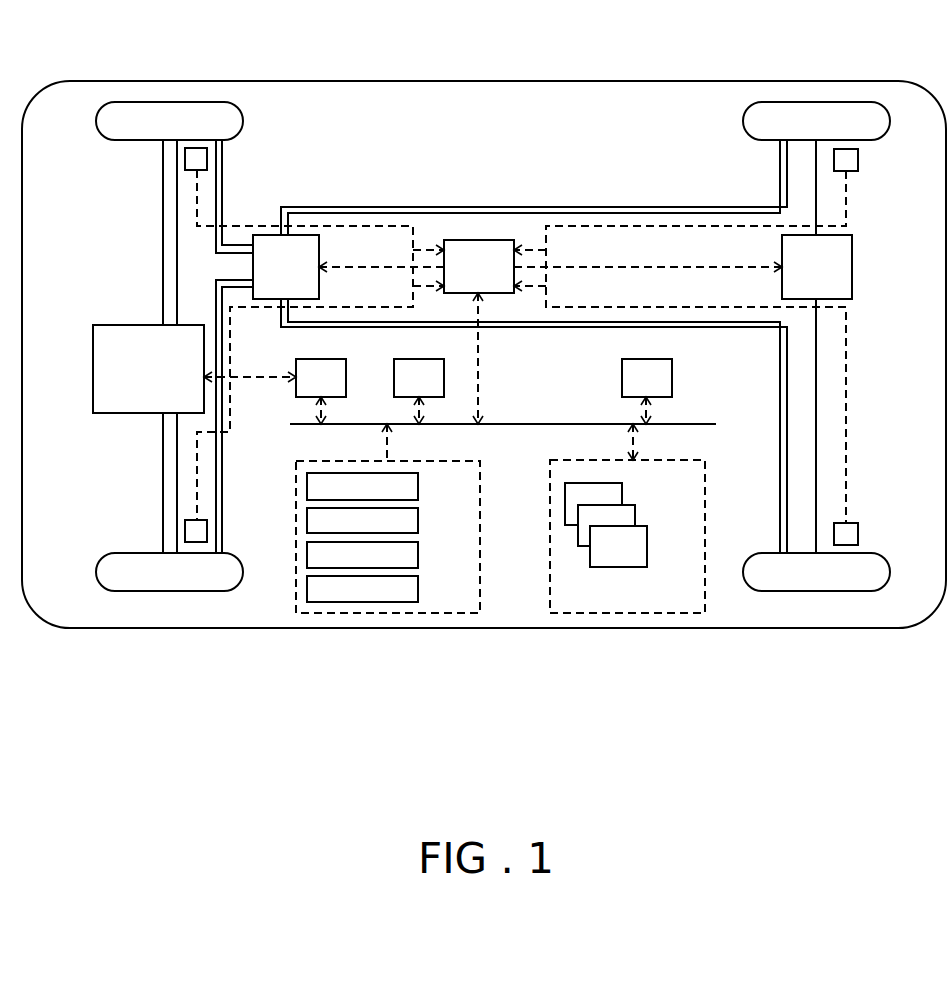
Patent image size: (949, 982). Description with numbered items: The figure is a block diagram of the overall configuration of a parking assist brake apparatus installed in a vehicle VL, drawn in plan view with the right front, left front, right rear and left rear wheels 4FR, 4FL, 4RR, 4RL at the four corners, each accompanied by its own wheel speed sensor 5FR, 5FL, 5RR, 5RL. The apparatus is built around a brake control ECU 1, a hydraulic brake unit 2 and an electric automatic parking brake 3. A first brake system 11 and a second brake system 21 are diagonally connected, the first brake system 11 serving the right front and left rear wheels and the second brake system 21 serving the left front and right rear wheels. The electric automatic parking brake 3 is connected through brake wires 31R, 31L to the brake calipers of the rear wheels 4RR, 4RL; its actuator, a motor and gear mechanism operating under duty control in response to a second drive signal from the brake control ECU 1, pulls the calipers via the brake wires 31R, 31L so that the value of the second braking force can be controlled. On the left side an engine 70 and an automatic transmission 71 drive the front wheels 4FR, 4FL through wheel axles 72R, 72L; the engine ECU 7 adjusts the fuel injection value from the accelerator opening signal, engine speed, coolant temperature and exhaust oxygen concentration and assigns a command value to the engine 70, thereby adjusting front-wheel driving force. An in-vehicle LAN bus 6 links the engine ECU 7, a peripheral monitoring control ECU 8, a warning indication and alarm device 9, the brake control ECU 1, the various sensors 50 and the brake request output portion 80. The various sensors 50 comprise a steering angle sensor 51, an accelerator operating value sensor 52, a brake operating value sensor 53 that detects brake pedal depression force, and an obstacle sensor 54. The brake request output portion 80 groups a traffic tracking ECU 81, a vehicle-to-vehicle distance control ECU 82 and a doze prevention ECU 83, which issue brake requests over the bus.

The vehicle VL is at (599, 73).
The brake control ECU 1 is at (478, 240).
The hydraulic brake unit 2 is at (261, 234).
The electric automatic parking brake 3 is at (852, 246).
The right front wheel 4FR is at (165, 102).
The left front wheel 4FL is at (163, 591).
The right rear wheel 4RR is at (812, 102).
The left rear wheel 4RL is at (810, 591).
The right front wheel speed sensor 5FR is at (185, 163).
The left front wheel speed sensor 5FL is at (185, 533).
The right rear wheel speed sensor 5RR is at (858, 160).
The left rear wheel speed sensor 5RL is at (858, 533).
The in-vehicle LAN bus 6 is at (695, 423).
The engine ECU 7 is at (327, 359).
The peripheral monitoring control ECU 8 is at (425, 359).
The warning indication and alarm device 9 is at (652, 359).
The first brake system 11 is at (223, 158).
The second brake system 21 is at (223, 451).
The right brake wire 31R is at (817, 203).
The left brake wire 31L is at (817, 467).
The various sensors 50 is at (296, 504).
The steering angle sensor 51 is at (418, 488).
The accelerator operating value sensor 52 is at (418, 521).
The brake operating value sensor 53 is at (418, 556).
The obstacle sensor 54 is at (418, 590).
The engine 70 is at (117, 337).
The automatic transmission 71 is at (123, 325).
The right wheel axle 72R is at (163, 213).
The left wheel axle 72L is at (163, 484).
The brake request output portion 80 is at (550, 503).
The traffic tracking ECU 81 is at (622, 495).
The vehicle-to-vehicle distance control ECU 82 is at (635, 515).
The doze prevention ECU 83 is at (647, 535).